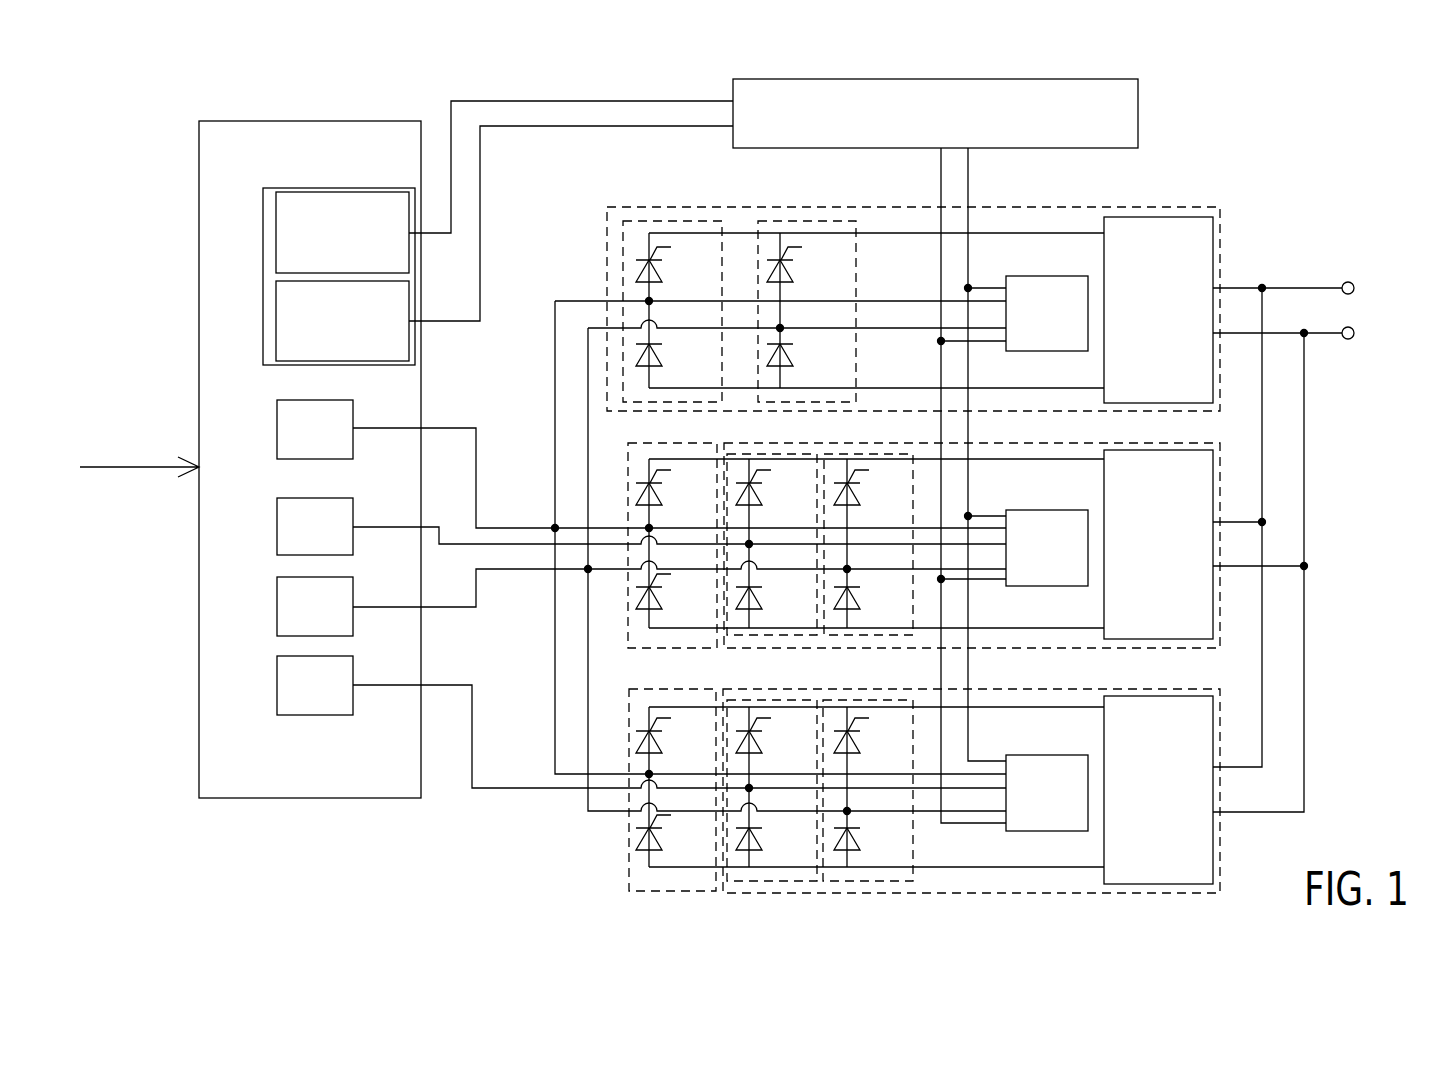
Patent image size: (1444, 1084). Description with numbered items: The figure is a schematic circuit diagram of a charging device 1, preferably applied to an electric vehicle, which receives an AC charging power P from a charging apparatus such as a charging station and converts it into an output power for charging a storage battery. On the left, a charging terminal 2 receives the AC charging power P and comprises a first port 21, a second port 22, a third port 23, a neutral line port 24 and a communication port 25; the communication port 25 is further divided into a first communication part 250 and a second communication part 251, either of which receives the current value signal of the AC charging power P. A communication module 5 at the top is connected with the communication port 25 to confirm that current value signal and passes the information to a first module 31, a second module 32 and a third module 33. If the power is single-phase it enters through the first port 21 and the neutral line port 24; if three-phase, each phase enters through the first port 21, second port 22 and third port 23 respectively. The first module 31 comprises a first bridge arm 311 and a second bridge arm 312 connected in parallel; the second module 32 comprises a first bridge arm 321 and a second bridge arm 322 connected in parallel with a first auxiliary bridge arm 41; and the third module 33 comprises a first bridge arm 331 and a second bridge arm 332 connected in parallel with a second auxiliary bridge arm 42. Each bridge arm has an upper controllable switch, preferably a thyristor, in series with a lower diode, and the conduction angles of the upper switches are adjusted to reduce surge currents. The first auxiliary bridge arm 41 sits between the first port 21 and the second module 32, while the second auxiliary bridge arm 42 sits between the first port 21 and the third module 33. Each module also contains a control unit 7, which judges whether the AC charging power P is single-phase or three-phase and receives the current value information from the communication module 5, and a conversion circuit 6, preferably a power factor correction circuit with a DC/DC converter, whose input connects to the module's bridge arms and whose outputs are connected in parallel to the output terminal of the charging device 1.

The charging device 1 is at (1392, 100).
The charging terminal 2 is at (199, 215).
The communication module 5 is at (1138, 112).
The conversion circuit 6 is at (1104, 378).
The control unit 7 is at (1055, 276).
The first port 21 is at (277, 428).
The second port 22 is at (277, 528).
The third port 23 is at (277, 690).
The neutral line port 24 is at (277, 607).
The communication port 25 is at (318, 188).
The first communication part 250 is at (276, 238).
The second communication part 251 is at (276, 321).
The first module 31 is at (1220, 233).
The second module 32 is at (1220, 625).
The third module 33 is at (1220, 868).
The first auxiliary bridge arm 41 is at (628, 468).
The second auxiliary bridge arm 42 is at (629, 868).
The first bridge arm 311 is at (808, 221).
The second bridge arm 312 is at (672, 221).
The first bridge arm 321 is at (870, 637).
The second bridge arm 322 is at (773, 637).
The first bridge arm 331 is at (870, 882).
The second bridge arm 332 is at (773, 882).
The AC charging power P is at (127, 469).